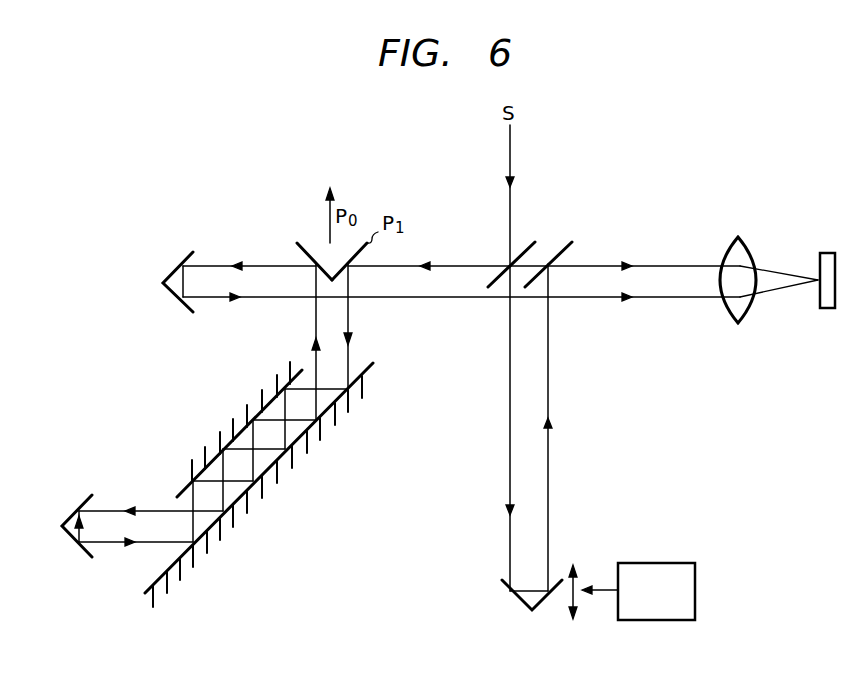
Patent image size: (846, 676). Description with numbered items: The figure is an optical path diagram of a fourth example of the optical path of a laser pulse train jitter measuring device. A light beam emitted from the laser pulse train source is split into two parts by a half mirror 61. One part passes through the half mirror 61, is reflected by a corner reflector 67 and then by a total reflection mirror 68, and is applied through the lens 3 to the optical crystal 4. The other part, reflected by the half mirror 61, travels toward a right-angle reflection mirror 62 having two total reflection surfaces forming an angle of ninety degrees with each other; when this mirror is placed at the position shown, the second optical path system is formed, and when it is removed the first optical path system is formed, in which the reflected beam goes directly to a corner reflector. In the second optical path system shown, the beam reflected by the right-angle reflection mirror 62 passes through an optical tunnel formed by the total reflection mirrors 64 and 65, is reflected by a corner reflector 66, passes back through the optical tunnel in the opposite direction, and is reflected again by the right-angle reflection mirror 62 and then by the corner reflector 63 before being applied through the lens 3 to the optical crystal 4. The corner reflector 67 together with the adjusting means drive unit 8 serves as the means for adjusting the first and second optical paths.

The lens 3 is at (741, 237).
The optical crystal 4 is at (827, 252).
The drive unit 8 is at (680, 562).
The half mirror 61 is at (527, 241).
The right-angle reflection mirror 62 is at (299, 240).
The corner reflector 63 is at (186, 250).
The total reflection mirror 64 is at (225, 422).
The total reflection mirror 65 is at (261, 502).
The corner reflector 66 is at (86, 498).
The corner reflector 67 is at (510, 592).
The total reflection mirror 68 is at (566, 243).